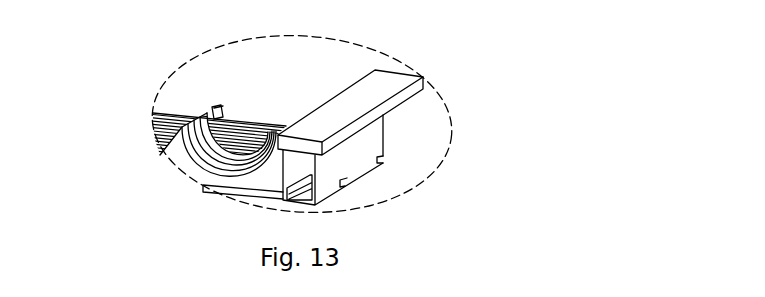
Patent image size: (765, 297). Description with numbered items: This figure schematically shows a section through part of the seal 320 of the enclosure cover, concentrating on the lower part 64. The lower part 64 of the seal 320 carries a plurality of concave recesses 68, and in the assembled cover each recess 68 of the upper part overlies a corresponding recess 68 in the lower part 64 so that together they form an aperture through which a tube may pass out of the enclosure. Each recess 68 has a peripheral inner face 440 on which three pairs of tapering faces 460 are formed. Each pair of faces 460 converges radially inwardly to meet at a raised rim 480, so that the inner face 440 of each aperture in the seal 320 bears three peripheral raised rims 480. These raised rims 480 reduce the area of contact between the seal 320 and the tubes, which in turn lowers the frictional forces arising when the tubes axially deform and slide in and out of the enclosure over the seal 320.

The seal 320 is at (455, 58).
The lower part 64 is at (396, 116).
The concave recess 68 is at (248, 113).
The peripheral inner face 440 is at (211, 107).
The raised rim 480 is at (207, 165).
The tapering face 460 is at (219, 166).